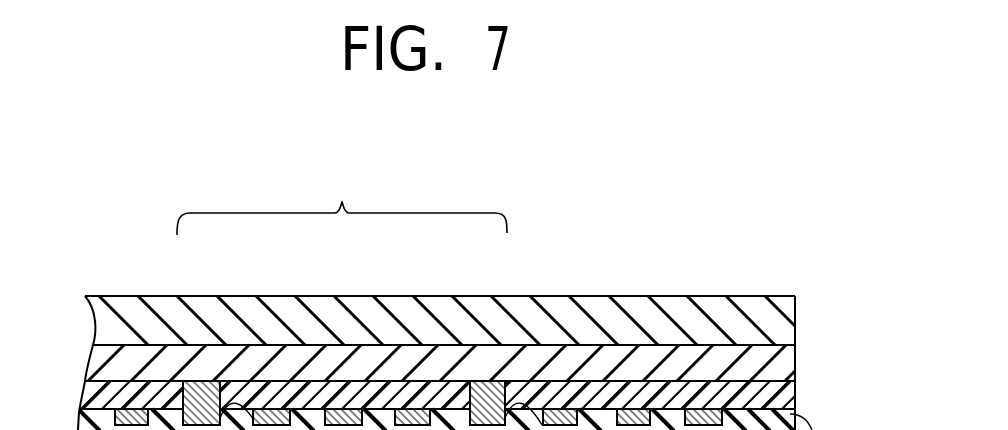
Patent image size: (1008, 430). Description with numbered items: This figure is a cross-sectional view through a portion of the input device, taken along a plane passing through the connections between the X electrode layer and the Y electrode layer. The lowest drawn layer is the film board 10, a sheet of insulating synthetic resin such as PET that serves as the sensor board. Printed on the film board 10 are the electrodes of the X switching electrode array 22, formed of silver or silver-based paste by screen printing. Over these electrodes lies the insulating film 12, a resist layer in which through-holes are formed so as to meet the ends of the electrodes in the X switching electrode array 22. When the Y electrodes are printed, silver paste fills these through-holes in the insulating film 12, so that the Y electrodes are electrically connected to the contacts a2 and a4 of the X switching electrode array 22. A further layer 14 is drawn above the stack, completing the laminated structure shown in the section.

The upper layer 14 is at (787, 303).
The film board 10 is at (785, 365).
The insulating film 12 is at (788, 393).
The X switching electrode array 22 is at (342, 198).
The contact a4 is at (212, 382).
The contact a2 is at (480, 382).